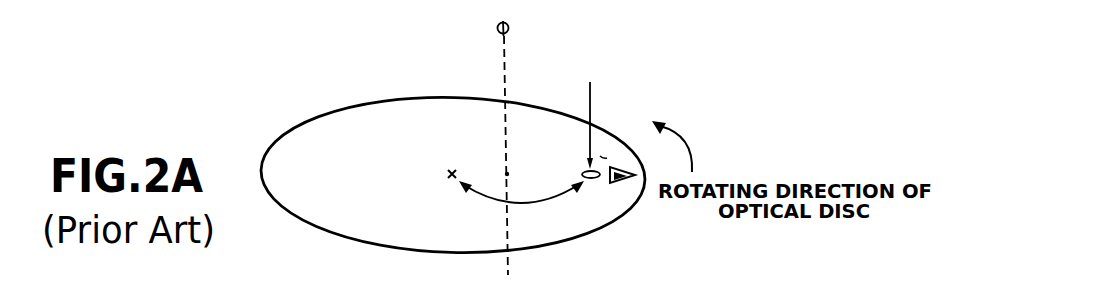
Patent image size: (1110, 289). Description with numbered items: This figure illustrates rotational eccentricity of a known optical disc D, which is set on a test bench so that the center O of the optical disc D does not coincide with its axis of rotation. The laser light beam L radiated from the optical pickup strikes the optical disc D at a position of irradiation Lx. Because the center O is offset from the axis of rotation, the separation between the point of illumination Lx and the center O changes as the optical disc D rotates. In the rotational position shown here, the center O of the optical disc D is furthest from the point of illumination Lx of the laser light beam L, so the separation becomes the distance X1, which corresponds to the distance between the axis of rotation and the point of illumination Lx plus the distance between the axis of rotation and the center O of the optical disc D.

The optical disc D is at (313, 132).
The center of the optical disc O is at (453, 167).
The laser light beam L is at (588, 113).
The position of irradiation Lx is at (591, 180).
The distance x1 X1 is at (521, 205).